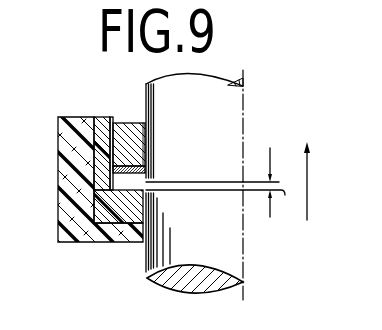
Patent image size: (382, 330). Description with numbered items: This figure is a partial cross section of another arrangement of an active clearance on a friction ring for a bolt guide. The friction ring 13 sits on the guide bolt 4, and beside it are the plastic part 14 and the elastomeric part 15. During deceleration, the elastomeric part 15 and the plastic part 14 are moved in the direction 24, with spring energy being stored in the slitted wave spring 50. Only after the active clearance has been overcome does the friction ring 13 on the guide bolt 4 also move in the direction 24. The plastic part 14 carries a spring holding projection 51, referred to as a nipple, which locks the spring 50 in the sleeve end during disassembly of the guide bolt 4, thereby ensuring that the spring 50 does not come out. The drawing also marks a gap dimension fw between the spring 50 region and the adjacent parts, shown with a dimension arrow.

The guide bolt 4 is at (236, 128).
The friction ring 13 is at (133, 128).
The plastic part 14 is at (98, 123).
The elastomeric part 15 is at (64, 131).
The direction 24 is at (309, 178).
The slitted wave spring 50 is at (149, 172).
The spring holding projection 51 is at (120, 107).
The gap width fw is at (282, 185).